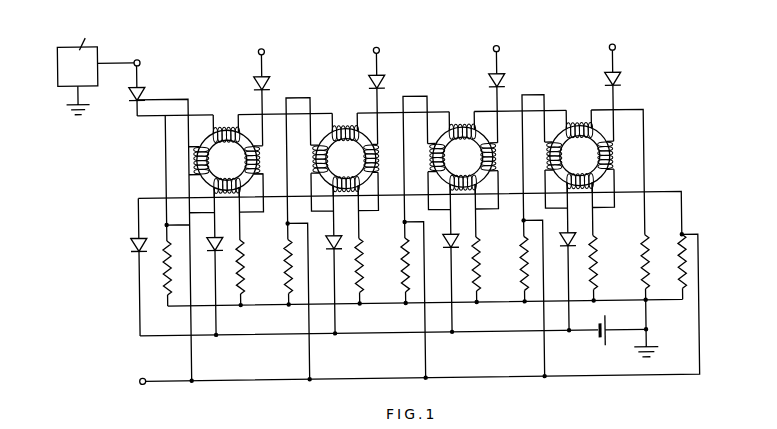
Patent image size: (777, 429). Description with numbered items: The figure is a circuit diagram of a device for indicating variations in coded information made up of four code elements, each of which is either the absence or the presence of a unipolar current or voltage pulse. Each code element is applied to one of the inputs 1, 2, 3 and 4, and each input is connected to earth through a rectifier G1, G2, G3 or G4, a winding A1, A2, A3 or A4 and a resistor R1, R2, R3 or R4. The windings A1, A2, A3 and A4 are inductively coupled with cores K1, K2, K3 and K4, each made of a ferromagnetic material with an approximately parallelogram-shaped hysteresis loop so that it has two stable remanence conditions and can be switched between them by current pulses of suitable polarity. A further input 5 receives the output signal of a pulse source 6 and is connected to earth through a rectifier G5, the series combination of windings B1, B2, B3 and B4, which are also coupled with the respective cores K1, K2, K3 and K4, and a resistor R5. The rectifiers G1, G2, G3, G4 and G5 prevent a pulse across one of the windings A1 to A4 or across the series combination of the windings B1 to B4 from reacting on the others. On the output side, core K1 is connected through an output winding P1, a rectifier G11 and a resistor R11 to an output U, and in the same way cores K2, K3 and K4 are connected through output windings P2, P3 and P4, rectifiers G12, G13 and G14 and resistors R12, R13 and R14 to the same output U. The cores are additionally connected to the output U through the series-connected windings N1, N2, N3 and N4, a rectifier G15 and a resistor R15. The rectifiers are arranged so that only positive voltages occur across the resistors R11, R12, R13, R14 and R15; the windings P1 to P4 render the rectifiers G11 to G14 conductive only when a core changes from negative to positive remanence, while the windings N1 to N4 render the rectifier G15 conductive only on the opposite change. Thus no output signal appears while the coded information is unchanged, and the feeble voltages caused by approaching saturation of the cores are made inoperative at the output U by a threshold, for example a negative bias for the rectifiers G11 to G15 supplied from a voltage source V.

The input 1 is at (261, 44).
The input 2 is at (376, 43).
The input 3 is at (496, 41).
The input 4 is at (612, 39).
The input 5 is at (136, 54).
The pulse source 6 is at (86, 68).
The rectifier G1 is at (273, 85).
The rectifier G2 is at (388, 84).
The rectifier G3 is at (508, 82).
The rectifier G4 is at (624, 81).
The rectifier G5 is at (145, 95).
The rectifier G11 is at (211, 243).
The rectifier G12 is at (330, 243).
The rectifier G13 is at (447, 243).
The rectifier G14 is at (565, 243).
The rectifier G15 is at (132, 246).
The core K1 is at (226, 160).
The core K2 is at (345, 158).
The core K3 is at (462, 157).
The core K4 is at (579, 155).
The winding A1 is at (256, 159).
The winding A2 is at (375, 159).
The winding A3 is at (492, 159).
The winding A4 is at (609, 159).
The winding B1 is at (226, 126).
The winding B2 is at (345, 125).
The winding B3 is at (462, 123).
The winding B4 is at (579, 121).
The winding N1 is at (227, 195).
The winding N2 is at (346, 194).
The winding N3 is at (463, 192).
The winding N4 is at (580, 190).
The output winding P1 is at (200, 157).
The output winding P2 is at (319, 157).
The output winding P3 is at (436, 157).
The output winding P4 is at (553, 157).
The resistor R1 is at (246, 268).
The resistor R2 is at (365, 268).
The resistor R3 is at (482, 268).
The resistor R4 is at (599, 268).
The resistor R5 is at (657, 261).
The resistor R11 is at (165, 274).
The resistor R12 is at (287, 292).
The resistor R13 is at (405, 292).
The resistor R14 is at (524, 293).
The resistor R15 is at (677, 249).
The output U is at (134, 381).
The voltage source V is at (613, 353).